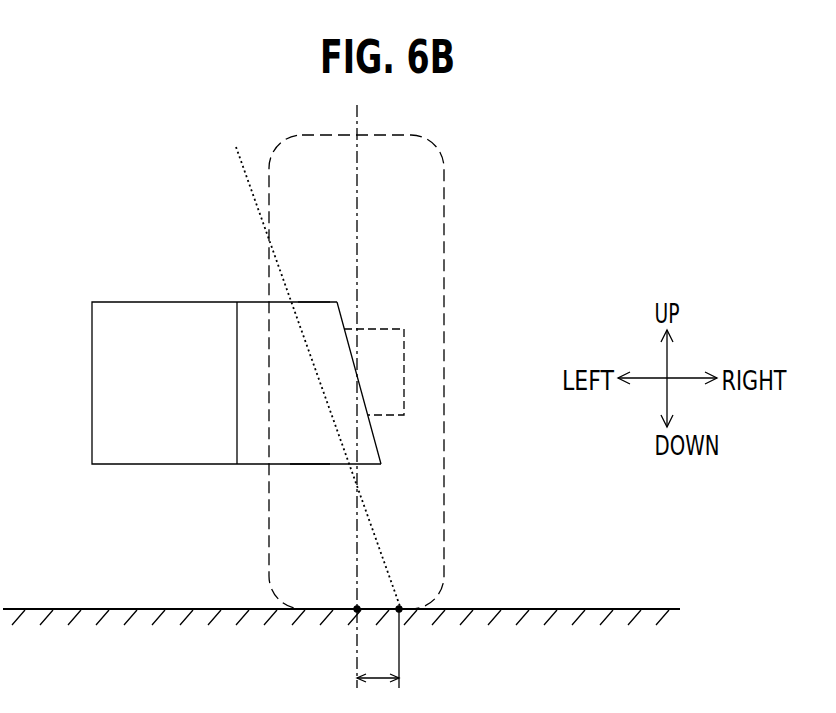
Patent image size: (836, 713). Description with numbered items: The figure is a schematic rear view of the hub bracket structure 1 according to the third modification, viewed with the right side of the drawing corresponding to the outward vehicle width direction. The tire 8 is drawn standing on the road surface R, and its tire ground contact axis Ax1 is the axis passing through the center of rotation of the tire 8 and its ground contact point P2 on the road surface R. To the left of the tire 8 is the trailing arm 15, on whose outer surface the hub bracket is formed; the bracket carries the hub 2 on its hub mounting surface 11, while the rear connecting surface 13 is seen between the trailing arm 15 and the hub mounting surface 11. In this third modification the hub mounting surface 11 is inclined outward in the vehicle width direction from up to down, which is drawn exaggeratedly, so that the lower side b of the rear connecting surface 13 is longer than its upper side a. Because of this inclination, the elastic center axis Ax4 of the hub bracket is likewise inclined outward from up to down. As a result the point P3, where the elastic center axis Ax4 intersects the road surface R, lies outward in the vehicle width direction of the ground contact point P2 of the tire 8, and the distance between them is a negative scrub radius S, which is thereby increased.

The hub bracket structure 1 is at (573, 163).
The hub 2 is at (404, 365).
The tire 8 is at (444, 197).
The hub mounting surface 11 is at (378, 448).
The rear connecting surface 13 is at (327, 455).
The trailing arm 15 is at (106, 425).
The tire ground contact axis Ax1 is at (357, 118).
The elastic center axis Ax4 is at (253, 195).
The upper side a is at (310, 302).
The lower side b is at (298, 464).
The ground contact point P2 is at (347, 613).
The intersection point P3 is at (406, 614).
The road surface R is at (572, 608).
The negative scrub radius S is at (378, 663).